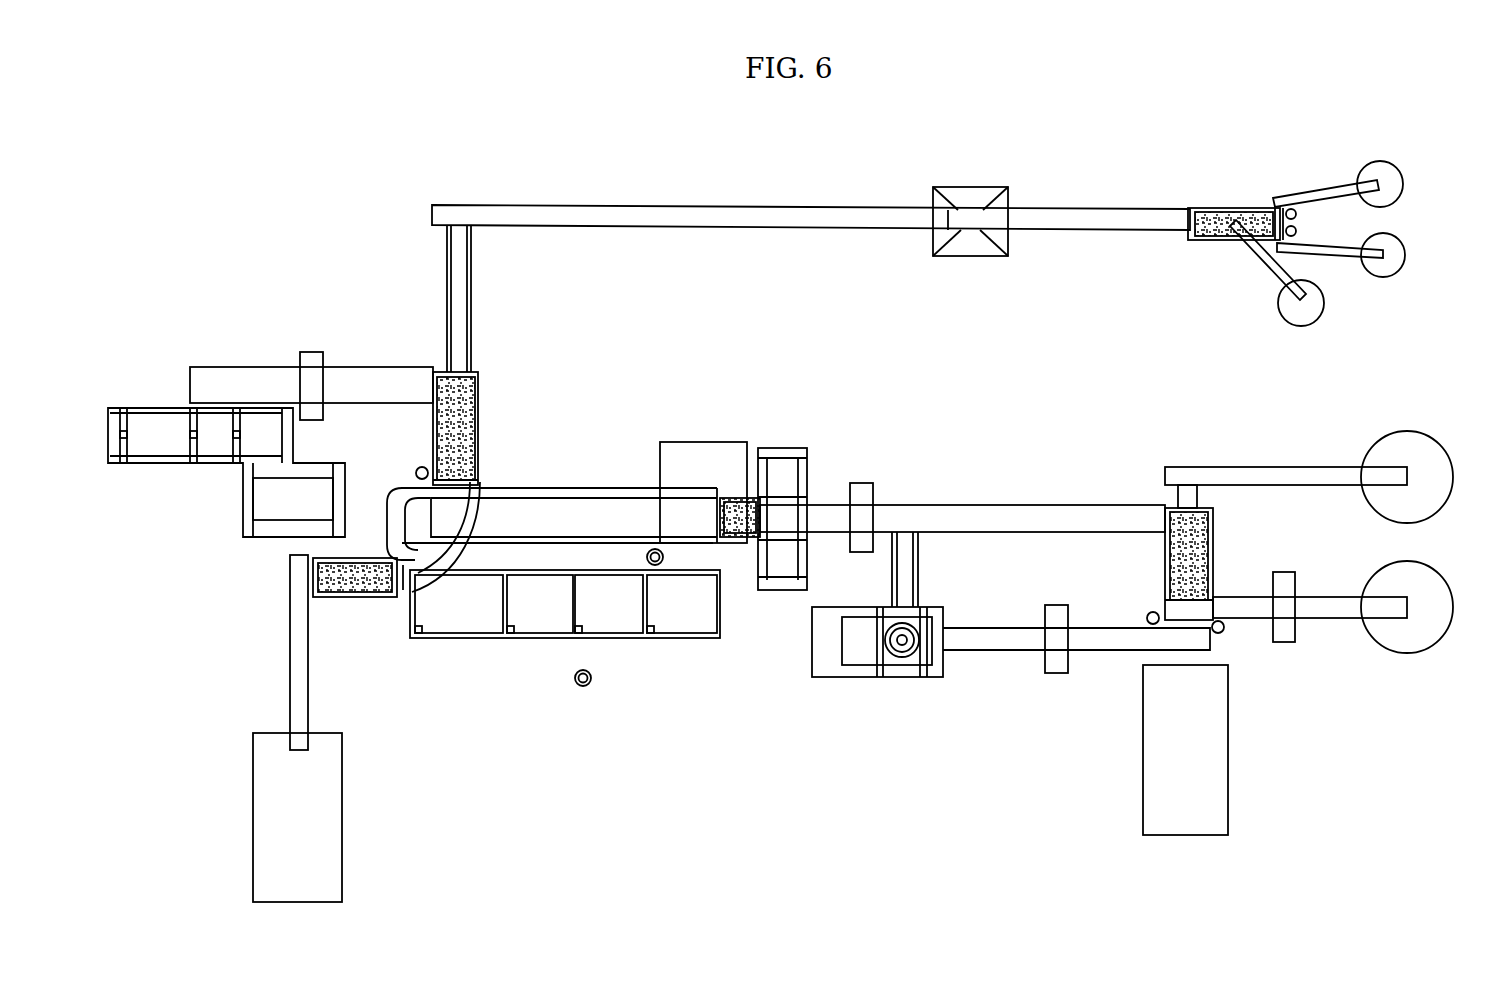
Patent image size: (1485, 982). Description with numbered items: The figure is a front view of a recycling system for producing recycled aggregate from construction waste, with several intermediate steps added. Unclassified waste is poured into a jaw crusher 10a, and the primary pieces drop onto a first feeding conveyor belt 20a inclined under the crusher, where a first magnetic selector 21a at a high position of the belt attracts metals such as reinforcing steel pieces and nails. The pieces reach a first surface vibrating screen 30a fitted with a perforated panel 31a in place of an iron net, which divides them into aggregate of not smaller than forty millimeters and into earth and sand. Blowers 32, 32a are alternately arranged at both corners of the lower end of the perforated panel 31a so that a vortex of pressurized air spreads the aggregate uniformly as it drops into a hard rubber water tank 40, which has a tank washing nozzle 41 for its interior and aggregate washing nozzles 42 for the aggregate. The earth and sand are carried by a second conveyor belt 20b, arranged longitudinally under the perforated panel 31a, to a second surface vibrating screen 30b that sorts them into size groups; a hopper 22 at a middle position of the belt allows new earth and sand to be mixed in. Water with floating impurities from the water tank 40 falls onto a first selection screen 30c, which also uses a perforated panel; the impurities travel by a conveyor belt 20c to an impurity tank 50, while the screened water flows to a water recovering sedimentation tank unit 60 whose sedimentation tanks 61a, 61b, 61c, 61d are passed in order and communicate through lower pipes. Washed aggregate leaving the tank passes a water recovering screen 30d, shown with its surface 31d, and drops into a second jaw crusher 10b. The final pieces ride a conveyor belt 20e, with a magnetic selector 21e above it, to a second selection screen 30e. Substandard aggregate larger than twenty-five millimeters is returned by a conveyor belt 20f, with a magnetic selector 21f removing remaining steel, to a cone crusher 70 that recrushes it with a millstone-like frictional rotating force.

The jaw crusher 10a is at (223, 450).
The second jaw crusher 10b is at (795, 480).
The first feeding conveyor belt 20a is at (262, 378).
The second conveyor belt 20b is at (460, 317).
The conveyor belt 20c is at (302, 708).
The conveyor belt 20e is at (927, 514).
The conveyor belt 20f is at (1020, 647).
The first magnetic selector 21a is at (317, 360).
The magnetic selector 21e is at (867, 492).
The magnetic selector 21f is at (1053, 677).
The hopper 22 is at (992, 193).
The first surface vibrating screen 30a is at (470, 452).
The second surface vibrating screen 30b is at (1208, 240).
The first selection screen 30c is at (365, 594).
The water recovering screen 30d is at (732, 500).
The second selection screen 30e is at (1203, 568).
The perforated panel 31a is at (482, 478).
The slider carriage 31d is at (783, 463).
The blower 32 is at (416, 473).
The blower 32a is at (482, 486).
The water tank 40 is at (628, 488).
The tank washing nozzle 41 is at (527, 500).
The aggregate washing nozzles 42 is at (567, 535).
The impurity tank 50 is at (335, 803).
The water recovering sedimentation tank unit 60 is at (537, 640).
The sedimentation tank 61a is at (459, 604).
The sedimentation tank 61b is at (540, 604).
The sedimentation tank 61c is at (609, 604).
The sedimentation tank 61d is at (682, 604).
The cone crusher 70 is at (900, 680).